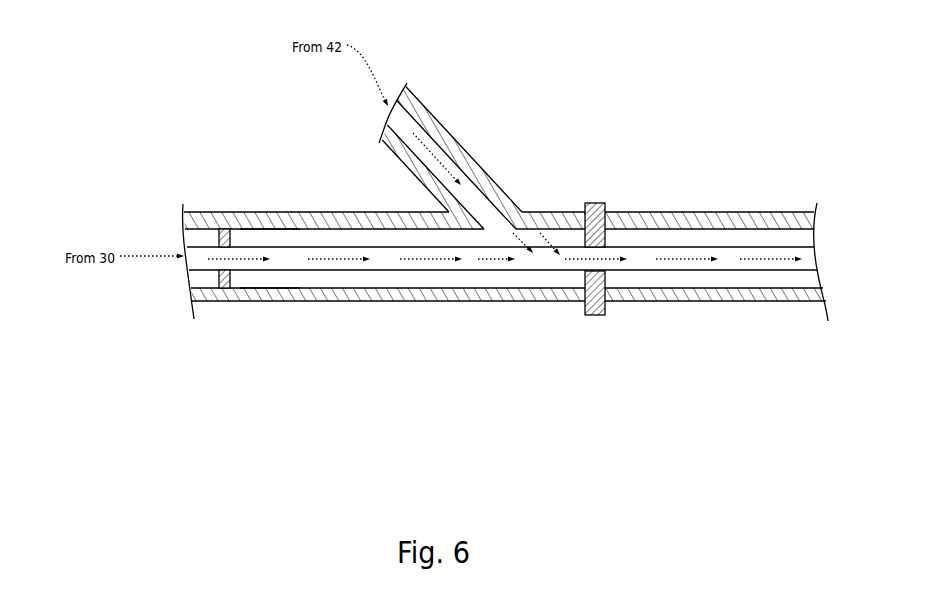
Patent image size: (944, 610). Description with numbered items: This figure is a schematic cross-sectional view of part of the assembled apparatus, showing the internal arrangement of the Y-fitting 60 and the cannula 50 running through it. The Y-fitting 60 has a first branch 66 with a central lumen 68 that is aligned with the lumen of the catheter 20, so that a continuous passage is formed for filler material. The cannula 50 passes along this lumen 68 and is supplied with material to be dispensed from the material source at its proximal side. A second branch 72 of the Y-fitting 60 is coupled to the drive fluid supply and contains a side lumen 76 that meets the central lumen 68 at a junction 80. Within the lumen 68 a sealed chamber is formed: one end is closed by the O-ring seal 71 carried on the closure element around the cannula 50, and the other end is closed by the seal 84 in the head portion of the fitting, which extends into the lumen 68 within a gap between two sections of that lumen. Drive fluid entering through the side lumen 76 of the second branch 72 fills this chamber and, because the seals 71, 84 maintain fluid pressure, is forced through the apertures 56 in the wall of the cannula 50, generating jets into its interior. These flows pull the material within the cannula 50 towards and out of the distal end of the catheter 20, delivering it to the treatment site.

The catheter 20 is at (814, 183).
The cannula 50 is at (453, 272).
The apertures 56 is at (528, 270).
The Y-fitting 60 is at (566, 323).
The first branch 66 is at (338, 313).
The lumen 68 is at (258, 281).
The seal 71 is at (231, 302).
The second branch 72 is at (443, 108).
The side lumen 76 is at (402, 132).
The junction 80 is at (524, 194).
The seal 84 is at (594, 203).